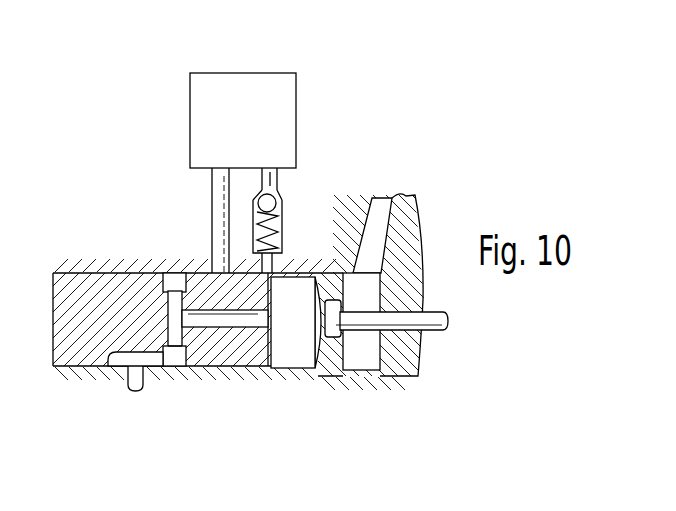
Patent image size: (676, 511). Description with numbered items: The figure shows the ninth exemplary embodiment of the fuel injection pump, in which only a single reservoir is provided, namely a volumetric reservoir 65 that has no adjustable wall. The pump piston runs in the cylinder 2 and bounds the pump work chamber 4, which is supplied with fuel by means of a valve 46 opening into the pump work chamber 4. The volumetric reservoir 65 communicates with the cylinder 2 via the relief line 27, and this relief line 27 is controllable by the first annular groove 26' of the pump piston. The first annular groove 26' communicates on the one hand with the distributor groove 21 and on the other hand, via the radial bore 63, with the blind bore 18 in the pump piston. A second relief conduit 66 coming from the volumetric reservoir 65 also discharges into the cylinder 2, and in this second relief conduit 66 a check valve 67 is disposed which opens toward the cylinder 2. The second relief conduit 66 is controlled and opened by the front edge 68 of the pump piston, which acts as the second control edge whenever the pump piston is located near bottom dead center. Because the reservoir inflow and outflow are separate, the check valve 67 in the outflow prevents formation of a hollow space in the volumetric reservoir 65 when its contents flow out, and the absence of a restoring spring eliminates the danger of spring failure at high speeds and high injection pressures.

The cylinder 2 is at (73, 273).
The pump work chamber 4 is at (297, 286).
The blind bore 18 is at (232, 320).
The distributor groove 21 is at (123, 357).
The first annular groove 26' is at (177, 381).
The relief line 27 is at (214, 199).
The valve 46 is at (445, 334).
The radial bore 63 is at (168, 309).
The volumetric reservoir 65 is at (284, 103).
The second relief conduit 66 is at (284, 251).
The check valve 67 is at (282, 190).
The front edge 68 is at (298, 348).